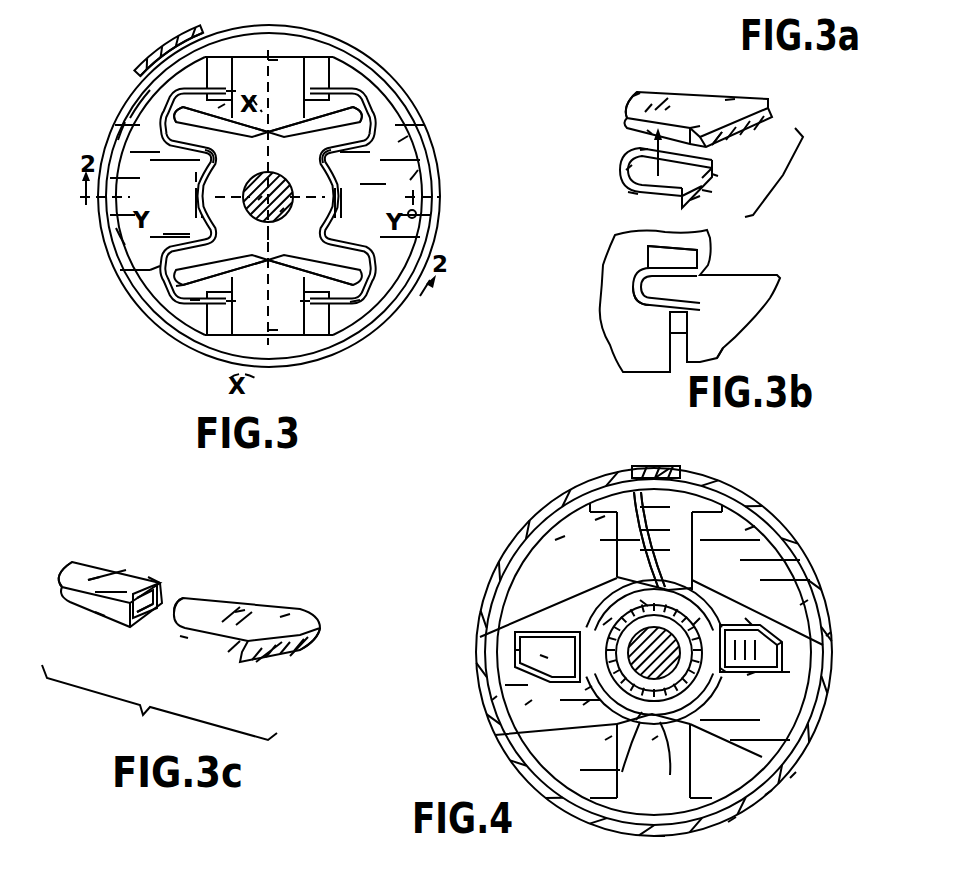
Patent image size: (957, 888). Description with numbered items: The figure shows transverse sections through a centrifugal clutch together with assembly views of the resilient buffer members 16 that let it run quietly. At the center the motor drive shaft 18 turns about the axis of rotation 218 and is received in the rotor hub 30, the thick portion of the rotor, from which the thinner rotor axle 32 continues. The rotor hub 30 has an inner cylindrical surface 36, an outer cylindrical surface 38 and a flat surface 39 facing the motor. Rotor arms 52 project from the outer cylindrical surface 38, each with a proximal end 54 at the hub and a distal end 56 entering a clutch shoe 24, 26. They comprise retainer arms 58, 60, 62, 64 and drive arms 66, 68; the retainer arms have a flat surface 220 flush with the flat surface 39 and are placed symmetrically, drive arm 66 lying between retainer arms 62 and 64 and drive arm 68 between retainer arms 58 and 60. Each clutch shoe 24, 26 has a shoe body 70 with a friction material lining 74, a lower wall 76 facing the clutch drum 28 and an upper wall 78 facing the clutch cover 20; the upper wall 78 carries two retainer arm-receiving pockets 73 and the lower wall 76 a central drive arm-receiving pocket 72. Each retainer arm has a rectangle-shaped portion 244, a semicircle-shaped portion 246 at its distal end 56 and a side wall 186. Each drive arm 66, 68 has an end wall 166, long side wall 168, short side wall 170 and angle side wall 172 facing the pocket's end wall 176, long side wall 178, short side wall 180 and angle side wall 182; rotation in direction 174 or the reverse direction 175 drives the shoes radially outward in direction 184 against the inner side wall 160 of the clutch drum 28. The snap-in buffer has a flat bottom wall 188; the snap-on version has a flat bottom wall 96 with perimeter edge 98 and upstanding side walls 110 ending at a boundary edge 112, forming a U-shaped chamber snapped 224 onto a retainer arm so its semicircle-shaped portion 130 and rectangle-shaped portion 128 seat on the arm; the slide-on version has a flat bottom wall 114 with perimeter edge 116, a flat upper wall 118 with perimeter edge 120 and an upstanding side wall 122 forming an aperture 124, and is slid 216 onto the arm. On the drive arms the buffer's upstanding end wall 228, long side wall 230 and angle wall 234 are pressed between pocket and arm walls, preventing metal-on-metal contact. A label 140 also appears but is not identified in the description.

In FIG. 3, the resilient buffer member 16 is at (350, 302).
In FIG. 3B, the resilient buffer member 16 is at (641, 303).
In FIG. 4, the resilient buffer member 16 is at (785, 658).
In FIG. 3, the motor drive shaft 18 is at (258, 200).
In FIG. 4, the motor drive shaft 18 is at (646, 590).
In FIG. 3, the clutch cover 20 is at (163, 48).
In FIG. 4, the clutch cover 20 is at (672, 470).
In FIG. 3, the clutch shoe 24 is at (418, 170).
In FIG. 4, the clutch shoe 24 is at (790, 778).
In FIG. 3, the clutch shoe 26 is at (140, 132).
In FIG. 4, the clutch shoe 26 is at (595, 520).
In FIG. 3, the clutch drum 28 is at (142, 86).
In FIG. 4, the clutch drum 28 is at (728, 822).
In FIG. 3B, the rotor hub 30 is at (717, 338).
In FIG. 3C, the rotor hub 30 is at (300, 662).
In FIG. 4, the rotor hub 30 is at (652, 740).
In FIG. 4, the rotor axle 32 is at (605, 740).
In FIG. 3, the inner cylindrical surface 36 is at (280, 212).
In FIG. 3B, the outer cylindrical surface 38 is at (672, 334).
In FIG. 3, the flat surface 39 is at (196, 176).
In FIG. 3A, the rotor arm 52 is at (688, 110).
In FIG. 3B, the rotor arm 52 is at (720, 287).
In FIG. 3C, the rotor arm 52 is at (235, 612).
In FIG. 3A, the proximal end 54 is at (725, 100).
In FIG. 3A, the distal end 56 is at (665, 110).
In FIG. 3, the retainer arm 58 is at (360, 118).
In FIG. 3, the retainer arm 60 is at (341, 204).
In FIG. 3, the retainer arm 62 is at (176, 286).
In FIG. 3, the retainer arm 64 is at (180, 114).
In FIG. 3, the drive arm 66 is at (212, 170).
In FIG. 4, the drive arm 66 is at (561, 668).
In FIG. 3, the drive arm 68 is at (328, 196).
In FIG. 4, the drive arm 68 is at (720, 668).
In FIG. 3, the shoe body 70 is at (150, 270).
In FIG. 4, the drive arm-receiving pocket 72 is at (746, 618).
In FIG. 3, the retainer arm-receiving pocket 73 is at (236, 301).
In FIG. 3B, the retainer arm-receiving pocket 73 is at (655, 253).
In FIG. 3, the friction material lining 74 is at (118, 232).
In FIG. 4, the friction material lining 74 is at (765, 795).
In FIG. 4, the lower wall 76 is at (745, 530).
In FIG. 3, the upper wall 78 is at (276, 196).
In FIG. 3A, the flat bottom wall 96 is at (702, 190).
In FIG. 3A, the perimeter edge 98 is at (630, 193).
In FIG. 3A, the upstanding side walls 110 is at (626, 168).
In FIG. 3A, the boundary edge 112 is at (690, 200).
In FIG. 3C, the flat bottom wall 114 is at (145, 620).
In FIG. 3C, the perimeter edge 116 is at (132, 630).
In FIG. 3C, the flat upper wall 118 is at (78, 562).
In FIG. 3C, the perimeter edge 120 is at (148, 576).
In FIG. 3C, the upstanding side wall 122 is at (97, 614).
In FIG. 3C, the aperture 124 is at (157, 584).
In FIG. 3A, the rectangle-shaped portion 128 is at (718, 176).
In FIG. 3C, the rectangle-shaped portion 128 is at (120, 580).
In FIG. 3A, the semicircle-shaped portion 130 is at (640, 150).
In FIG. 3C, the semicircle-shaped portion 130 is at (88, 576).
In FIG. 3A, the component 140 is at (566, 6).
In FIG. 3, the inner side wall 160 is at (427, 214).
In FIG. 4, the inner side wall 160 is at (655, 836).
In FIG. 4, the end wall 166 is at (790, 672).
In FIG. 4, the long side wall 168 is at (548, 632).
In FIG. 4, the short side wall 170 is at (800, 605).
In FIG. 4, the angle side wall 172 is at (784, 650).
In FIG. 4, the direction of rotation 174 is at (603, 625).
In FIG. 4, the direction of rotation 175 is at (640, 600).
In FIG. 4, the end wall 176 is at (770, 672).
In FIG. 4, the long side wall 178 is at (570, 634).
In FIG. 4, the short side wall 180 is at (572, 690).
In FIG. 4, the angle side wall 182 is at (747, 675).
In FIG. 4, the radially outward direction 184 is at (833, 628).
In FIG. 3A, the side wall 186 is at (642, 112).
In FIG. 3C, the side wall 186 is at (228, 652).
In FIG. 3, the flat bottom wall 188 is at (218, 108).
In FIG. 3C, the sliding direction 216 is at (182, 632).
In FIG. 3, the axis of rotation 218 is at (268, 232).
In FIG. 4, the axis of rotation 218 is at (664, 585).
In FIG. 3, the flat surface 220 is at (190, 300).
In FIG. 3A, the snapping direction 224 is at (647, 130).
In FIG. 4, the upstanding end wall 228 is at (515, 650).
In FIG. 4, the upstanding long side wall 230 is at (540, 655).
In FIG. 4, the upstanding angle wall 234 is at (503, 685).
In FIG. 3A, the rectangle-shaped portion 244 is at (694, 115).
In FIG. 3C, the rectangle-shaped portion 244 is at (280, 617).
In FIG. 3A, the semicircle-shaped portion 246 is at (633, 96).
In FIG. 3C, the semicircle-shaped portion 246 is at (192, 598).